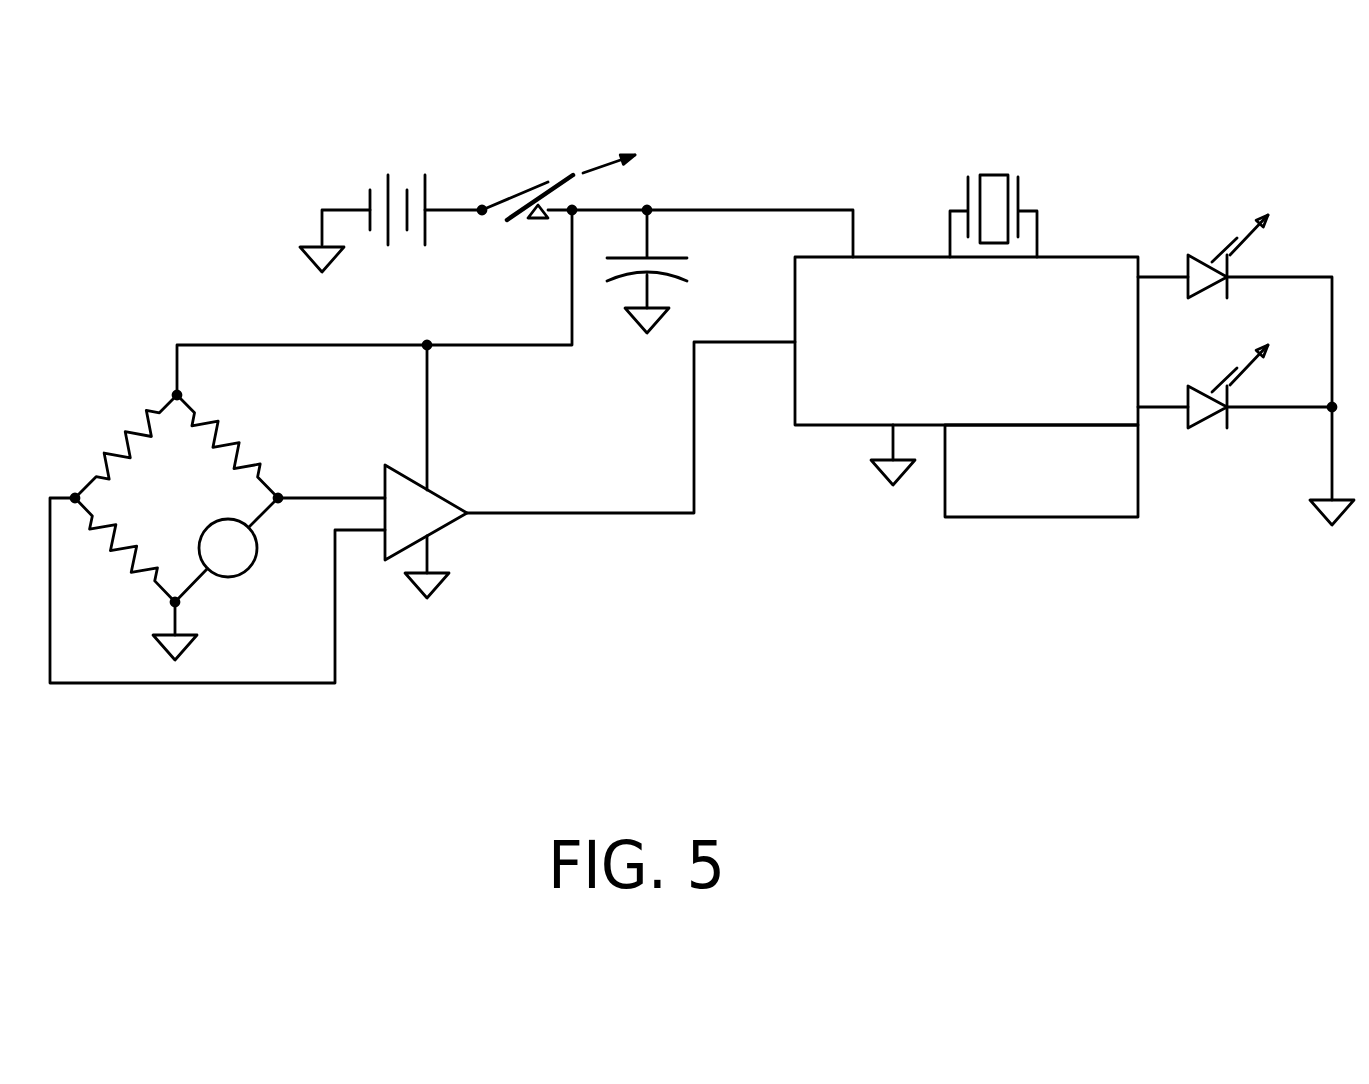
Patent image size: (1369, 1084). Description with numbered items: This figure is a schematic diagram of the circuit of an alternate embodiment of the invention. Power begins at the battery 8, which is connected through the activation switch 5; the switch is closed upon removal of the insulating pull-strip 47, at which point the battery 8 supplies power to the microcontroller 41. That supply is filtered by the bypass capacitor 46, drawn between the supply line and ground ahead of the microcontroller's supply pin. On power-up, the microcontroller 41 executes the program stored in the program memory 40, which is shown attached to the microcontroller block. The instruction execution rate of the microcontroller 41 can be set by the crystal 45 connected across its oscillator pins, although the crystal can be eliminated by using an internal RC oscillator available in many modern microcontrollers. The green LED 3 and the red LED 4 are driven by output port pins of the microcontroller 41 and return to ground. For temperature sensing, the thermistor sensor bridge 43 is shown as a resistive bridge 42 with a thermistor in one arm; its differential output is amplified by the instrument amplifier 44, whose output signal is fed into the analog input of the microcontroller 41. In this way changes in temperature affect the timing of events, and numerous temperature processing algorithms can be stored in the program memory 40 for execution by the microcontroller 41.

The green LED 3 is at (1197, 285).
The red LED 4 is at (1197, 415).
The activation switch 5 is at (512, 200).
The battery 8 is at (368, 198).
The program memory 40 is at (967, 507).
The microcontroller 41 is at (900, 270).
The strain gauge bridge circuit 42 is at (158, 412).
The thermistor sensor bridge 43 is at (242, 560).
The instrument amplifier 44 is at (442, 497).
The crystal 45 is at (993, 175).
The bypass capacitor 46 is at (672, 258).
The insulating pull-strip 47 is at (558, 183).